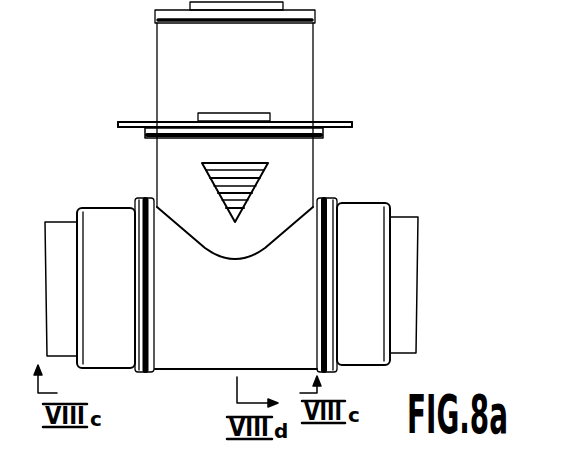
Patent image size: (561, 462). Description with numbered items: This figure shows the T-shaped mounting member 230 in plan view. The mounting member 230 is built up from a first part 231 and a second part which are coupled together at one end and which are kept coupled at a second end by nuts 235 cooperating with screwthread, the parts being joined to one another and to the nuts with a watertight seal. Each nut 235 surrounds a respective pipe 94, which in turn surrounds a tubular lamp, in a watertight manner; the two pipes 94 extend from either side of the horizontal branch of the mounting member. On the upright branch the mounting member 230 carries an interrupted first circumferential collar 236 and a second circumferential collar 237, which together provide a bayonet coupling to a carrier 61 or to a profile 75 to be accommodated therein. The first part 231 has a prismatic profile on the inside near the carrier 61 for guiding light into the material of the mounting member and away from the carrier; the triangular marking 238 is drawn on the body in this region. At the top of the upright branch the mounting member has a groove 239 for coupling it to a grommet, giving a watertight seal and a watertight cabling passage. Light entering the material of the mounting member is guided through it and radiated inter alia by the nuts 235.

The groove 239 is at (317, 22).
The mounting member 230 is at (231, 197).
The first part 231 is at (300, 183).
The triangular marking 238 is at (215, 193).
The first circumferential collar 236 is at (237, 113).
The carrier 61 is at (335, 121).
The profile 75 is at (235, 124).
The second circumferential collar 237 is at (323, 133).
The nuts 235 is at (115, 353).
The pipe 94 is at (62, 237).